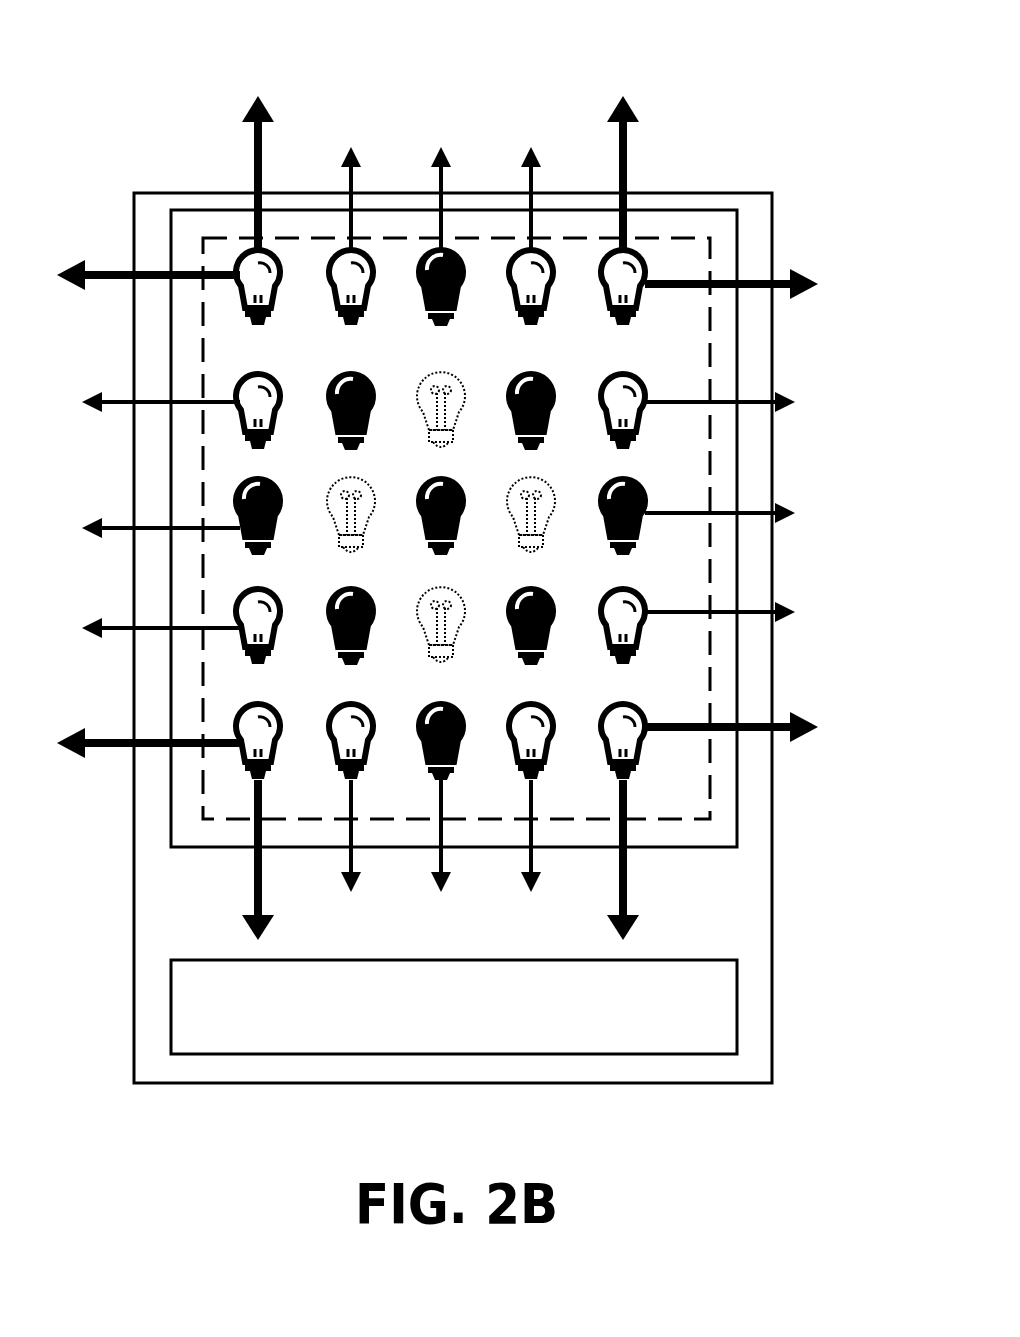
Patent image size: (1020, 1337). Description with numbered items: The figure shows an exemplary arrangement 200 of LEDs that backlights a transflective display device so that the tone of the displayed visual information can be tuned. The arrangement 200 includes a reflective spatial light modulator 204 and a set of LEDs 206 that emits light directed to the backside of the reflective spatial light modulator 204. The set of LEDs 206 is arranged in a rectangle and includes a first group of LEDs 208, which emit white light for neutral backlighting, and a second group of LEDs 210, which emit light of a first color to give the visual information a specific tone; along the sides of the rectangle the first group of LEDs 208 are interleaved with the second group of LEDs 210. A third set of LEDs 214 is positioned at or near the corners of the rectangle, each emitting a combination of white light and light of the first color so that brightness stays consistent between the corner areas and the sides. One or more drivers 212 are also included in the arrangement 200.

The arrangement 200 is at (754, 72).
The reflective spatial light modulator 204 is at (718, 198).
The set of LEDs 206 is at (684, 828).
The first group of LEDs 208 is at (460, 527).
The second group of LEDs 210 is at (466, 524).
The drivers 212 is at (527, 1016).
The third set of LEDs 214 is at (466, 524).